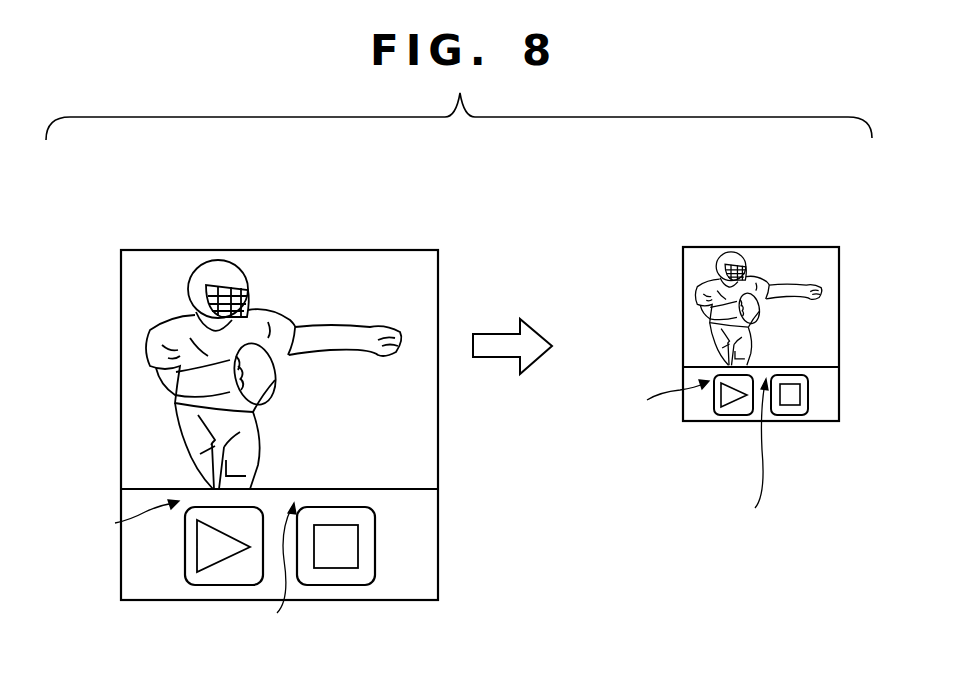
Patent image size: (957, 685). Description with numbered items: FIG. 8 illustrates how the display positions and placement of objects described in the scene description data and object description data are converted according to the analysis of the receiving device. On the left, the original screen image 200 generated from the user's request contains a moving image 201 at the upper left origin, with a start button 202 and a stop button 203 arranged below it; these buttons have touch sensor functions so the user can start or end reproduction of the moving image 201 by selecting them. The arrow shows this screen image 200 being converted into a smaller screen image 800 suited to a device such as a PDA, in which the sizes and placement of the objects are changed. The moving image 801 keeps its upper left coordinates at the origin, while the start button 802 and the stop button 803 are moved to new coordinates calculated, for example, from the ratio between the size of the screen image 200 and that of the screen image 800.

The screen image 200 is at (258, 214).
The moving image 201 is at (406, 250).
The start button 202 is at (185, 567).
The stop button 203 is at (375, 517).
The screen image 800 is at (765, 213).
The moving image 801 is at (812, 247).
The start button 802 is at (728, 415).
The stop button 803 is at (795, 415).